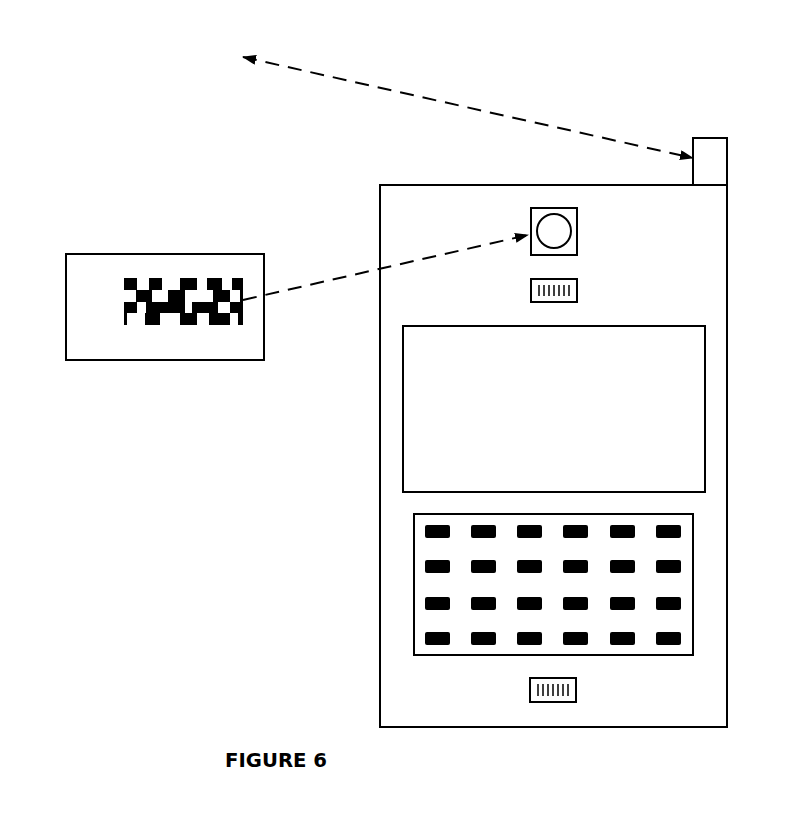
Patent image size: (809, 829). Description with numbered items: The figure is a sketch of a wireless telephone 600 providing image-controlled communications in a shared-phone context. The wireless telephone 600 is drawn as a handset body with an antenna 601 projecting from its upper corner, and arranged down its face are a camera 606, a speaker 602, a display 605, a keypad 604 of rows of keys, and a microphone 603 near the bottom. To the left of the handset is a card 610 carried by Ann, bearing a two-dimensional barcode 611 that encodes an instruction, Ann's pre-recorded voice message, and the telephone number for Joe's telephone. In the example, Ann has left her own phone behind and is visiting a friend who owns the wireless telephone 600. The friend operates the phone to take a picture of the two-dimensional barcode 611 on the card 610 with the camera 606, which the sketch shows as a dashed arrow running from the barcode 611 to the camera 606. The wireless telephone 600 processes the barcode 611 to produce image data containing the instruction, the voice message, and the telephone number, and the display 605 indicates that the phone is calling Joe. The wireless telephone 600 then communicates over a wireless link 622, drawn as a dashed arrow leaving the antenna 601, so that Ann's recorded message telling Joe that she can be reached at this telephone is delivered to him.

The wireless telephone 600 is at (715, 75).
The antenna 601 is at (725, 138).
The speaker 602 is at (578, 292).
The microphone 603 is at (577, 691).
The keypad 604 is at (470, 655).
The display 605 is at (686, 326).
The camera 606 is at (578, 230).
The card 610 is at (297, 297).
The two-dimensional barcode 611 is at (124, 305).
The wireless link 622 is at (535, 126).